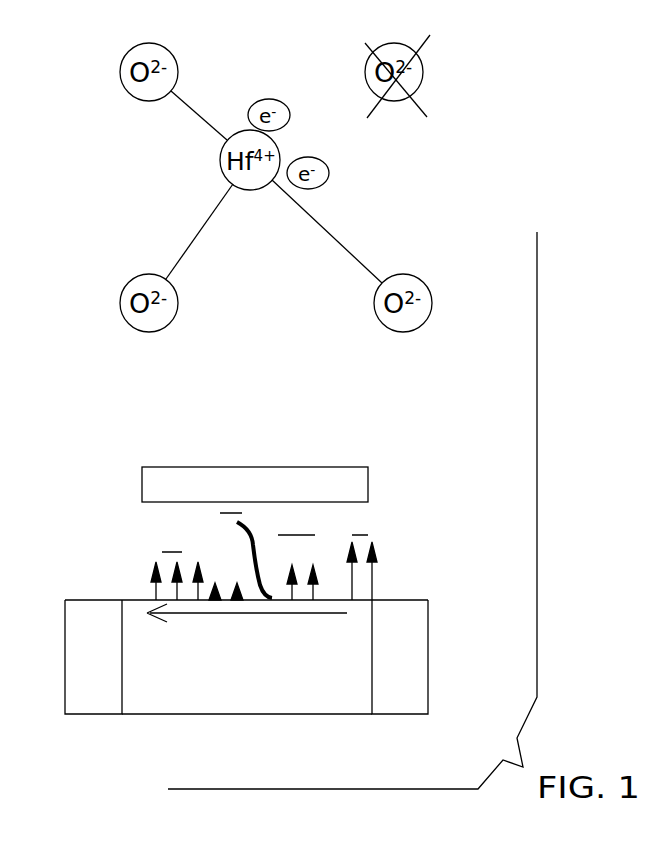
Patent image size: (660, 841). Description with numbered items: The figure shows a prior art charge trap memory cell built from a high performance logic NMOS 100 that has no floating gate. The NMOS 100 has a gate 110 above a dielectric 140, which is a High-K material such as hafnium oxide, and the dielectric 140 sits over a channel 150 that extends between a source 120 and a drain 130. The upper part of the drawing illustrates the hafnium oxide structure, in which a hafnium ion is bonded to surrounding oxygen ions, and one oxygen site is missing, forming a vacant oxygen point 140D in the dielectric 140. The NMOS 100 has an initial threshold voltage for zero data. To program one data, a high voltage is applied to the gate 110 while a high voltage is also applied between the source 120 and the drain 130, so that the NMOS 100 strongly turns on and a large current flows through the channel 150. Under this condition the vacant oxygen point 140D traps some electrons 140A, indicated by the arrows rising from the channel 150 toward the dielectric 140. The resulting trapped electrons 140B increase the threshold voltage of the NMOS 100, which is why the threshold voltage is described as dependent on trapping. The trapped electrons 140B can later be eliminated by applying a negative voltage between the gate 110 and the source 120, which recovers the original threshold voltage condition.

The NMOS 100 is at (453, 471).
The gate 110 is at (263, 476).
The source 120 is at (95, 703).
The drain 130 is at (408, 703).
The dielectric 140 is at (214, 537).
The electrons 140A is at (155, 592).
The trapped electrons 140B is at (233, 557).
The vacant oxygen point 140D is at (165, 553).
The channel 150 is at (205, 617).